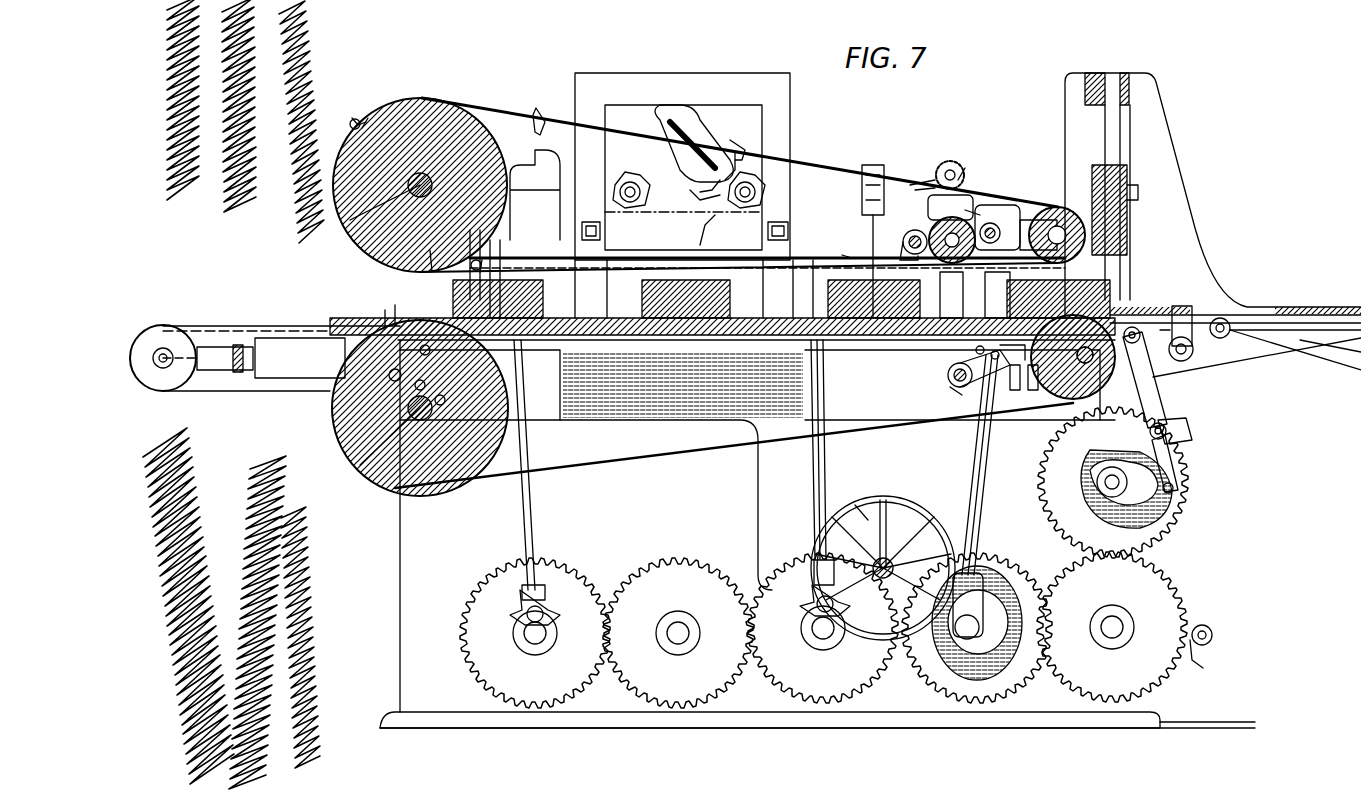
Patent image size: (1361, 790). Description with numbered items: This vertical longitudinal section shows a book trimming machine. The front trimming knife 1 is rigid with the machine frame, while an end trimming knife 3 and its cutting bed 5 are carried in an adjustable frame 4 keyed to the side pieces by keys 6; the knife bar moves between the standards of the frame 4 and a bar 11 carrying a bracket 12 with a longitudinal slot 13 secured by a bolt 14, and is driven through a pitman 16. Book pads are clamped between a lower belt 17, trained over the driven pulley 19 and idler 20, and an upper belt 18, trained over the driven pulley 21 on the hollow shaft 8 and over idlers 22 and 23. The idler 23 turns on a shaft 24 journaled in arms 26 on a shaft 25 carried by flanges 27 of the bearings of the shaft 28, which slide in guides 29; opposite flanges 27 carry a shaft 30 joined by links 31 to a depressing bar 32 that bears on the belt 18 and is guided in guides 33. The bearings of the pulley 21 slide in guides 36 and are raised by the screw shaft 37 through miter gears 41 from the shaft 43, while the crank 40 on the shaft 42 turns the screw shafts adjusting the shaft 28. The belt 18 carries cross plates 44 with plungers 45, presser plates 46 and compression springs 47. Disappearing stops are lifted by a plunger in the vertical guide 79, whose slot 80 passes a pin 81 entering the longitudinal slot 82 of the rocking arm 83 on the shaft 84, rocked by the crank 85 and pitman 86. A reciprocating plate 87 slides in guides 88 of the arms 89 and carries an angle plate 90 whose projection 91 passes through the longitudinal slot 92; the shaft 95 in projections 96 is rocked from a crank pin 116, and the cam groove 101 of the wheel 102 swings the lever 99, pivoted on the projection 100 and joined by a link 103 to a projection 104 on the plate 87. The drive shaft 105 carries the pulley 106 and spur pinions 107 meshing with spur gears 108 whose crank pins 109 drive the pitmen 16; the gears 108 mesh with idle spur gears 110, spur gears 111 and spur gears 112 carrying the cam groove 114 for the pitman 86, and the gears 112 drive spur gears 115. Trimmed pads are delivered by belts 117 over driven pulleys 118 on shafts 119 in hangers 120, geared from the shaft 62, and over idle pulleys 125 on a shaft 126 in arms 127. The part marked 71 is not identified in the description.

The trimming knife 1 is at (1120, 235).
The trimming knife 3 is at (709, 229).
The frame 4 is at (758, 73).
The cutting bed 5 is at (632, 280).
The key 6 is at (476, 272).
The shaft 8 is at (426, 172).
The bar 11 is at (748, 156).
The bracket 12 is at (770, 232).
The longitudinal slot 13 is at (380, 381).
The bolt 14 is at (591, 224).
The pitman 16 is at (533, 511).
The belt 17 is at (734, 445).
The belt 18 is at (876, 168).
The driven pulley 19 is at (385, 490).
The idler 20 is at (1045, 398).
The driven pulley 21 is at (408, 98).
The idler 22 is at (980, 200).
The idler 23 is at (1045, 213).
The shaft 24 is at (1068, 208).
The shaft 25 is at (1001, 219).
The arm 26 is at (1015, 205).
The flange 27 is at (986, 192).
The shaft 28 is at (932, 228).
The guide 29 is at (954, 295).
The shaft 30 is at (905, 240).
The link 31 is at (905, 250).
The depressing bar 32 is at (832, 258).
The guide 33 is at (488, 262).
The guide 36 is at (392, 306).
The screw shaft 37 is at (423, 251).
The crank 40 is at (944, 162).
The miter gear 41 is at (928, 182).
The shaft 42 is at (962, 165).
The shaft 43 is at (350, 220).
The cross plate 44 is at (362, 118).
The plunger 45 is at (705, 192).
The presser plate 46 is at (356, 118).
The compression spring 47 is at (350, 125).
The shaft 62 is at (360, 465).
The post 71 is at (999, 295).
The vertical guide 79 is at (1013, 386).
The slot 80 is at (1038, 386).
The pin 81 is at (1002, 340).
The longitudinal slot 82 is at (978, 346).
The rocking arm 83 is at (958, 386).
The shaft 84 is at (955, 372).
The crank 85 is at (959, 339).
The pitman 86 is at (985, 530).
The reciprocating plate 87 is at (1298, 310).
The guide 88 is at (1338, 310).
The arm 89 is at (1330, 348).
The angle plate 90 is at (1158, 312).
The projection 91 is at (1181, 306).
The longitudinal slot 92 is at (1228, 318).
The shaft 95 is at (1215, 634).
The projection 96 is at (1216, 656).
The lever 99 is at (1155, 398).
The projection 100 is at (1190, 432).
The cam groove 101 is at (1180, 505).
The wheel 102 is at (1148, 548).
The link 103 is at (1210, 365).
The projection 104 is at (1295, 359).
The drive shaft 105 is at (910, 540).
The pulley 106 is at (865, 498).
The spur pinion 107 is at (905, 515).
The spur gear 108 is at (823, 628).
The crank pin 109 is at (805, 632).
The idle spur gear 110 is at (678, 633).
The spur gear 111 is at (535, 633).
The spur gear 112 is at (977, 628).
The cam groove 114 is at (1060, 580).
The spur gear 115 is at (1165, 613).
The crank pin 116 is at (1045, 488).
The belt 117 is at (330, 326).
The driven pulley 118 is at (448, 376).
The shaft 119 is at (449, 351).
The hanger 120 is at (463, 398).
The idle pulley 125 is at (205, 345).
The shaft 126 is at (165, 345).
The arm 127 is at (300, 358).